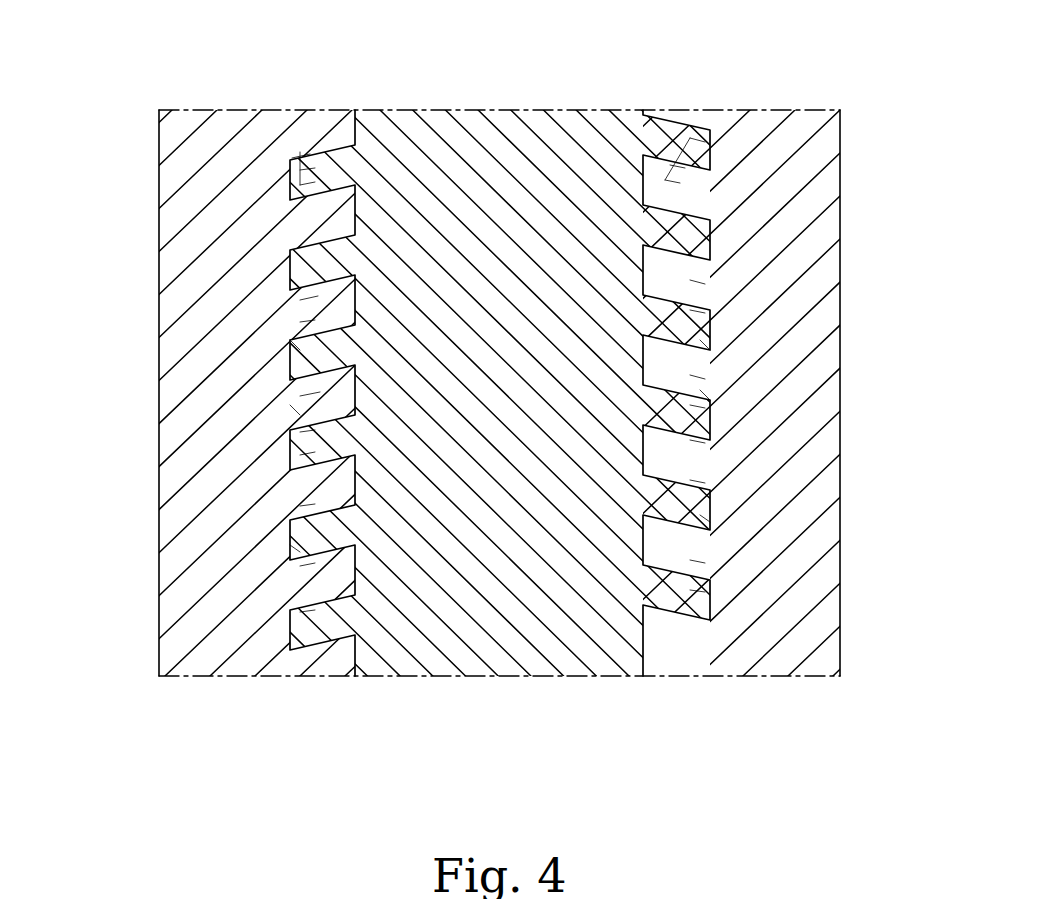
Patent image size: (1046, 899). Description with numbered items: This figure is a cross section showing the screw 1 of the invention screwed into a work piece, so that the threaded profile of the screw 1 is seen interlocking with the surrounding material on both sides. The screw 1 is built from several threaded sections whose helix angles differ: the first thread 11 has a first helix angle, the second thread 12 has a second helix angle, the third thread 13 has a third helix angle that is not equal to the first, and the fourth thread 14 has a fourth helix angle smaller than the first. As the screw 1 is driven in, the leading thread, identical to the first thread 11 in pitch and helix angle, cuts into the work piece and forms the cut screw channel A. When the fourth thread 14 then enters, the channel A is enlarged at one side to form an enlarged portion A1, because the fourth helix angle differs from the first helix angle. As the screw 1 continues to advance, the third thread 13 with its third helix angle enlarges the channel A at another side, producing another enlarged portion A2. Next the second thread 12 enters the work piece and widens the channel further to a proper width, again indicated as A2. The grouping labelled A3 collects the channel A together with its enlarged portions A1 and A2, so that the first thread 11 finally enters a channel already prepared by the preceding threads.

The screw 1 is at (465, 165).
The first thread 11 is at (332, 252).
The second thread 12 is at (300, 410).
The third thread 13 is at (298, 547).
The fourth thread 14 is at (300, 345).
The cut screw channel A is at (300, 170).
The enlarged portion A1 is at (300, 185).
The another enlarged portion A2 is at (300, 152).
The flank group A3 is at (82, 118).